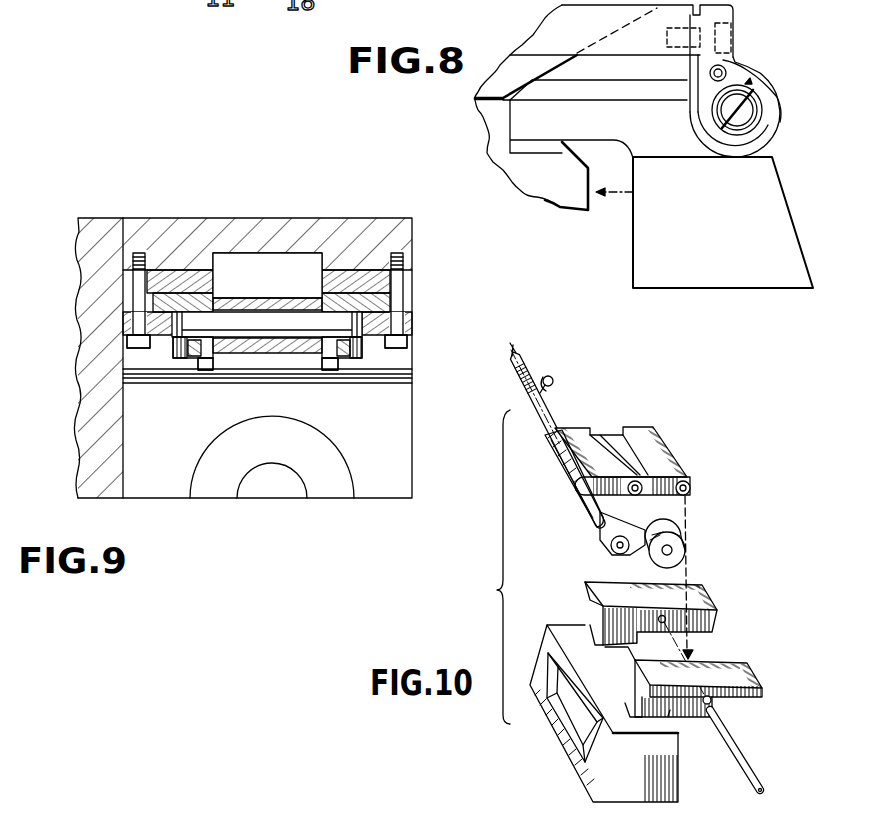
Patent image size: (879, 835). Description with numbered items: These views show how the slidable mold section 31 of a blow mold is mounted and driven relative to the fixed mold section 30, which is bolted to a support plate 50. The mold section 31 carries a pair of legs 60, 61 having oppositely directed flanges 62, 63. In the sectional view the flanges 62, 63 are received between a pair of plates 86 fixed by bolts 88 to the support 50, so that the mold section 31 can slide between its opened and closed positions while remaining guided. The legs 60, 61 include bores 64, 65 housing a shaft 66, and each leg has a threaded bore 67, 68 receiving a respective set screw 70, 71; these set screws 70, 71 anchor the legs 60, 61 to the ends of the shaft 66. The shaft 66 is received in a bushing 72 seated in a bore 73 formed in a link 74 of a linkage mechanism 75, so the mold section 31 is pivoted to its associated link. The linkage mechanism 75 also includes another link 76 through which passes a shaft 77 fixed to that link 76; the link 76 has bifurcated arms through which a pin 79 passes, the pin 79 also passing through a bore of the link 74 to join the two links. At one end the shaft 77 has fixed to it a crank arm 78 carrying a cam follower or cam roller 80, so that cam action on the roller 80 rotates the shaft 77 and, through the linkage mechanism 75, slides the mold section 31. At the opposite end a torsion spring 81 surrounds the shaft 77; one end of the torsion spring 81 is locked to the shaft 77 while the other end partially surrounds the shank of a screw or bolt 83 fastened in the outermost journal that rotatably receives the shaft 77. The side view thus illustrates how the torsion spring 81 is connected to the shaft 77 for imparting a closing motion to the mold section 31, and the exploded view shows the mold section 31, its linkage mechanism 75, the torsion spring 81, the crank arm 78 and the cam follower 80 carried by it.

In FIG. 8, the mold section 30 is at (559, 185).
In FIG. 8, the mold section 31 is at (716, 268).
In FIG. 10, the mold section 31 is at (664, 783).
In FIG. 9, the plate 50 is at (412, 222).
In FIG. 9, the leg 60 is at (175, 345).
In FIG. 10, the leg 60 is at (618, 640).
In FIG. 9, the leg 61 is at (363, 347).
In FIG. 10, the leg 61 is at (670, 710).
In FIG. 9, the flange 62 is at (157, 300).
In FIG. 10, the flange 62 is at (593, 580).
In FIG. 9, the flange 63 is at (373, 298).
In FIG. 10, the flange 63 is at (763, 688).
In FIG. 10, the bore 64 is at (666, 617).
In FIG. 10, the bore 65 is at (718, 692).
In FIG. 9, the shaft 66 is at (243, 327).
In FIG. 10, the shaft 66 is at (743, 760).
In FIG. 9, the threaded bore 67 is at (200, 350).
In FIG. 9, the threaded bore 68 is at (342, 352).
In FIG. 9, the set screw 70 is at (193, 355).
In FIG. 9, the set screw 71 is at (348, 357).
In FIG. 9, the bushing 72 is at (272, 322).
In FIG. 9, the bore 73 is at (240, 310).
In FIG. 10, the bore 73 is at (690, 487).
In FIG. 9, the link 74 is at (225, 300).
In FIG. 10, the link 74 is at (672, 447).
In FIG. 10, the linkage mechanism 75 is at (611, 401).
In FIG. 10, the link 76 is at (562, 463).
In FIG. 8, the shaft 77 is at (748, 120).
In FIG. 10, the shaft 77 is at (550, 420).
In FIG. 10, the crank arm 78 is at (615, 560).
In FIG. 10, the pin 79 is at (640, 496).
In FIG. 10, the cam follower 80 is at (684, 548).
In FIG. 8, the torsion spring 81 is at (780, 108).
In FIG. 9, the torsion spring 81 is at (127, 325).
In FIG. 10, the torsion spring 81 is at (533, 375).
In FIG. 8, the screw 83 is at (723, 67).
In FIG. 10, the screw 83 is at (555, 378).
In FIG. 9, the plate 86 is at (180, 270).
In FIG. 9, the bolt 88 is at (137, 258).